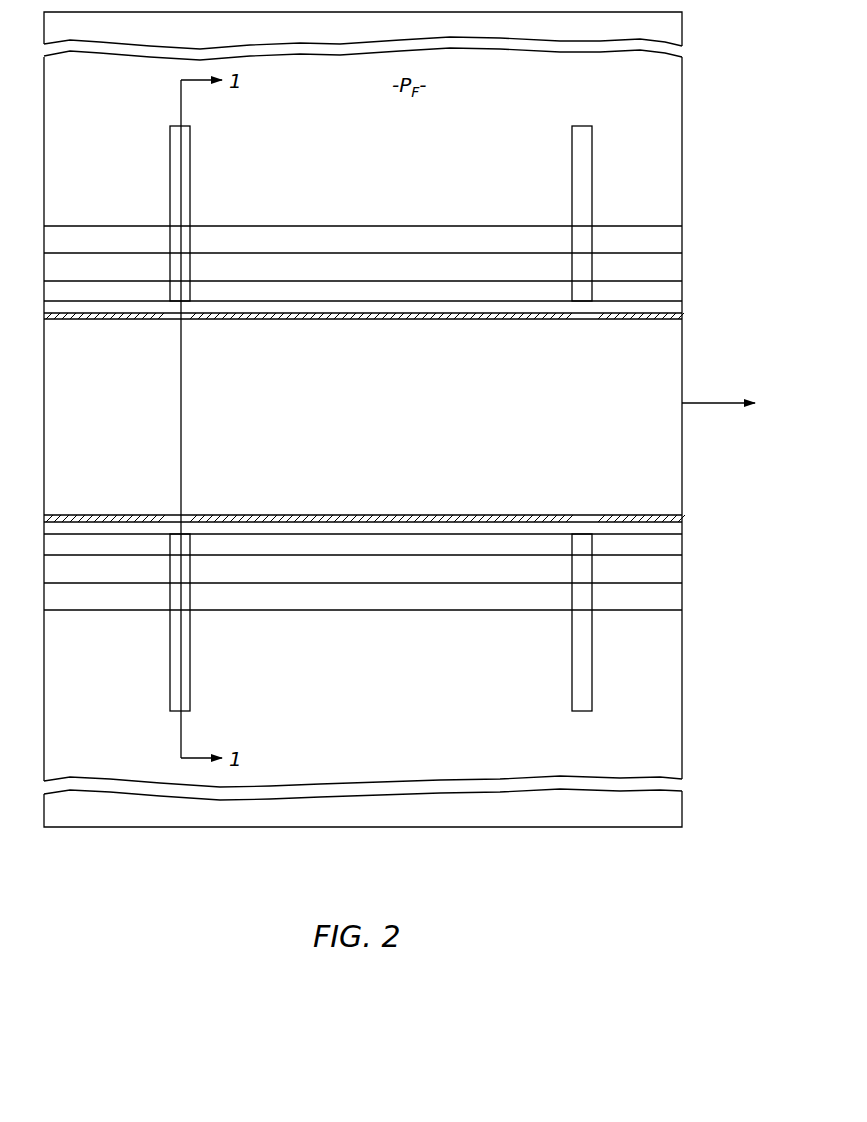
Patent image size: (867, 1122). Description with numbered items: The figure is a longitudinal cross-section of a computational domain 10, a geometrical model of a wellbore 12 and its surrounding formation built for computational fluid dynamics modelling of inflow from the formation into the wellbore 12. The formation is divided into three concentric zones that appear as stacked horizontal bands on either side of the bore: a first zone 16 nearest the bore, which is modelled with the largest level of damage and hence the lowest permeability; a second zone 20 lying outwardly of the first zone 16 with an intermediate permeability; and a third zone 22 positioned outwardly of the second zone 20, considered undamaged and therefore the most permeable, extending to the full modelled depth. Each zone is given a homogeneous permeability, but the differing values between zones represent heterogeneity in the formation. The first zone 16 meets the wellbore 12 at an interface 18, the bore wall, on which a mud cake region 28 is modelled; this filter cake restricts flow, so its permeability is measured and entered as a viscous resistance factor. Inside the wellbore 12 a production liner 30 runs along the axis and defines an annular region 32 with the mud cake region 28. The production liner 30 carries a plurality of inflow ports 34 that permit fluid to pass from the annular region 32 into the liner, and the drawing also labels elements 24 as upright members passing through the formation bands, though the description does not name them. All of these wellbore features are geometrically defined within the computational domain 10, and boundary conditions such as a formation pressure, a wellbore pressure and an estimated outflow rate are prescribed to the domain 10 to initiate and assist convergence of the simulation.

The computational domain 10 is at (130, 870).
The wellbore 12 is at (399, 419).
The first zone 16 is at (78, 263).
The interface 18 is at (126, 280).
The second zone 20 is at (148, 240).
The third zone 22 is at (106, 135).
The pins 24 is at (190, 149).
The mud cake region 28 is at (76, 290).
The production liner 30 is at (320, 514).
The annular region 32 is at (418, 528).
The inflow ports 34 is at (185, 319).